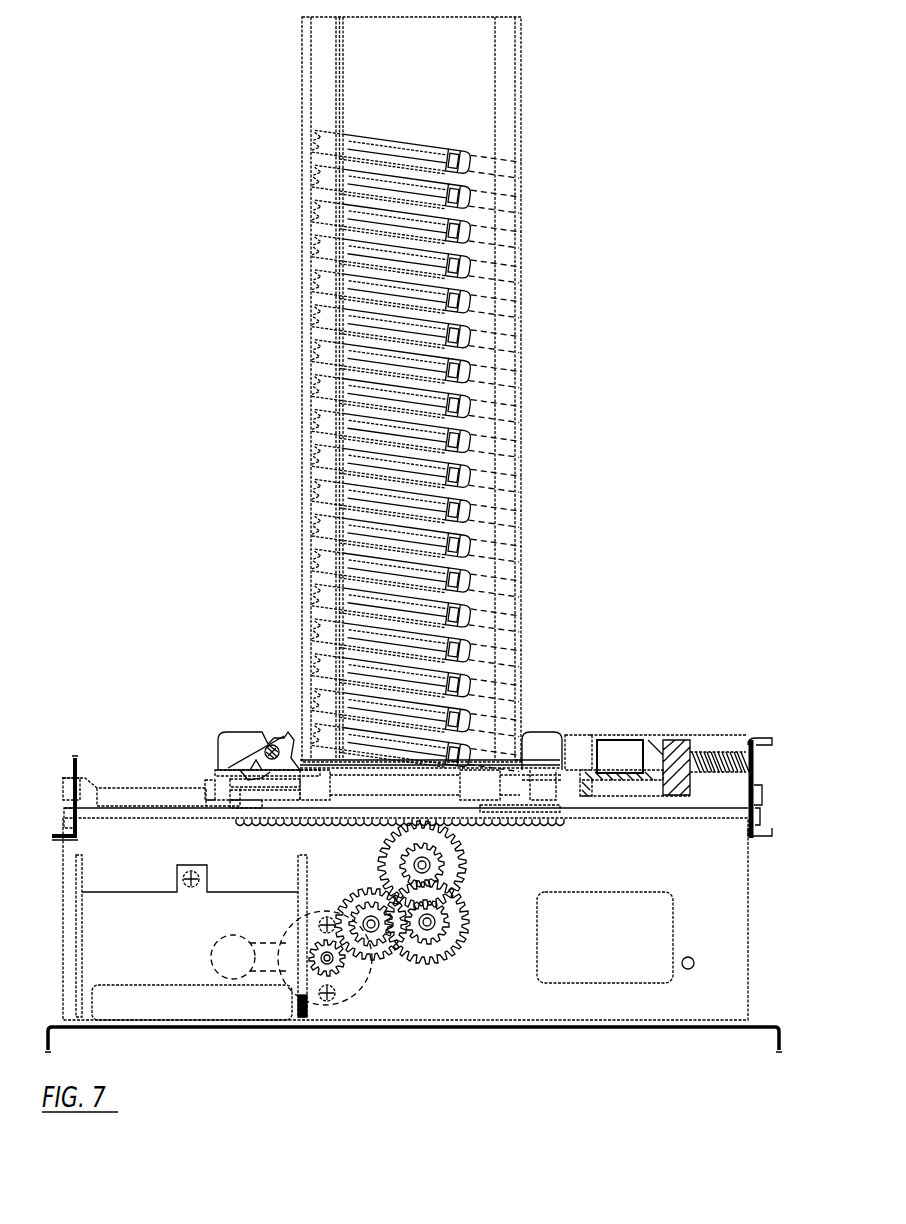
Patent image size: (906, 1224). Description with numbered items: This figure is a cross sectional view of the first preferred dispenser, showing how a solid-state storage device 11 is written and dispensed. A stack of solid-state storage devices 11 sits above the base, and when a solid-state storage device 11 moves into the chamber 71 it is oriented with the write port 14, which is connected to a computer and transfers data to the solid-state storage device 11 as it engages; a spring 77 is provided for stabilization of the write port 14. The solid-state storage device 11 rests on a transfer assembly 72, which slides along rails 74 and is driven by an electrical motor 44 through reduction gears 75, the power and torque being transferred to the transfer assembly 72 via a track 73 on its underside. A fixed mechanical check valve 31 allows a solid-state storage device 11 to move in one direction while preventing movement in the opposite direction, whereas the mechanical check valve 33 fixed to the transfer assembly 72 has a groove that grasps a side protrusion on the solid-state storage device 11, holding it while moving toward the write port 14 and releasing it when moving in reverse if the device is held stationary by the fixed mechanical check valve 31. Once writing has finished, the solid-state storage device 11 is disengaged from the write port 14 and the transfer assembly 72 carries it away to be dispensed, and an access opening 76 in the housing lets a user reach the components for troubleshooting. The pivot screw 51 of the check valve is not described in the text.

The solid-state storage device 11 is at (343, 212).
The mechanical check valve 31 is at (258, 750).
The pivot screw 51 is at (272, 745).
The mechanical check valve 33 is at (210, 790).
The chamber 71 is at (522, 768).
The write port 14 is at (561, 768).
The spring 77 is at (722, 752).
The rails 74 is at (723, 820).
The track 73 is at (562, 822).
The transfer assembly 72 is at (492, 800).
The reduction gears 75 is at (440, 963).
The electrical motor 44 is at (380, 970).
The access opening 76 is at (645, 983).